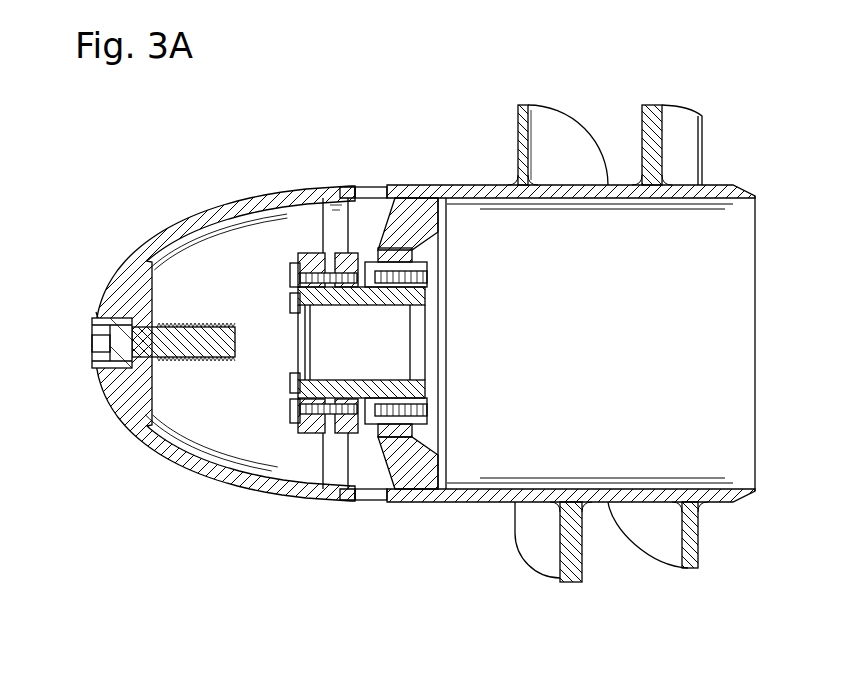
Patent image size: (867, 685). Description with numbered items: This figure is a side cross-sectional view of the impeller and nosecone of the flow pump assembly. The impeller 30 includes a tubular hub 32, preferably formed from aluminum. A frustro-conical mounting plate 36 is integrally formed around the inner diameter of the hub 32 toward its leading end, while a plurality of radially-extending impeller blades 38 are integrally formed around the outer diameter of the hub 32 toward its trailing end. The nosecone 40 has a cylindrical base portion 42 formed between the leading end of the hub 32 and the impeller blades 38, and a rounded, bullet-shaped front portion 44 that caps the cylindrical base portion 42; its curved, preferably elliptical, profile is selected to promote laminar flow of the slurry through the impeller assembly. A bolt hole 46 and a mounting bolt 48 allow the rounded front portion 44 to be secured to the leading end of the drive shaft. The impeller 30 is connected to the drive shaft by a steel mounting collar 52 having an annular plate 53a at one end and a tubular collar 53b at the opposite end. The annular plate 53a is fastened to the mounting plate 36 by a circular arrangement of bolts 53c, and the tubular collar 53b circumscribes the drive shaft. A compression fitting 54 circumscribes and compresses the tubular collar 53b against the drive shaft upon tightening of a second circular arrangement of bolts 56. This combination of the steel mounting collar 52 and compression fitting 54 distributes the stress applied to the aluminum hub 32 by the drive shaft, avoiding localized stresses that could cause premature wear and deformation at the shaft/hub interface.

The impeller 30 is at (642, 369).
The tubular hub 32 is at (622, 197).
The frustro-conical mounting plate 36 is at (412, 462).
The impeller blades 38 is at (551, 566).
The nosecone 40 is at (93, 163).
The cylindrical base portion 42 is at (338, 501).
The rounded front portion 44 is at (143, 262).
The bolt hole 46 is at (98, 313).
The mounting bolt 48 is at (108, 370).
The steel mounting collar 52 is at (373, 357).
The annular plate 53a is at (427, 285).
The tubular collar 53b is at (446, 331).
The bolts 53c is at (427, 412).
The compression fitting 54 is at (300, 258).
The second circular arrangement of bolts 56 is at (292, 284).